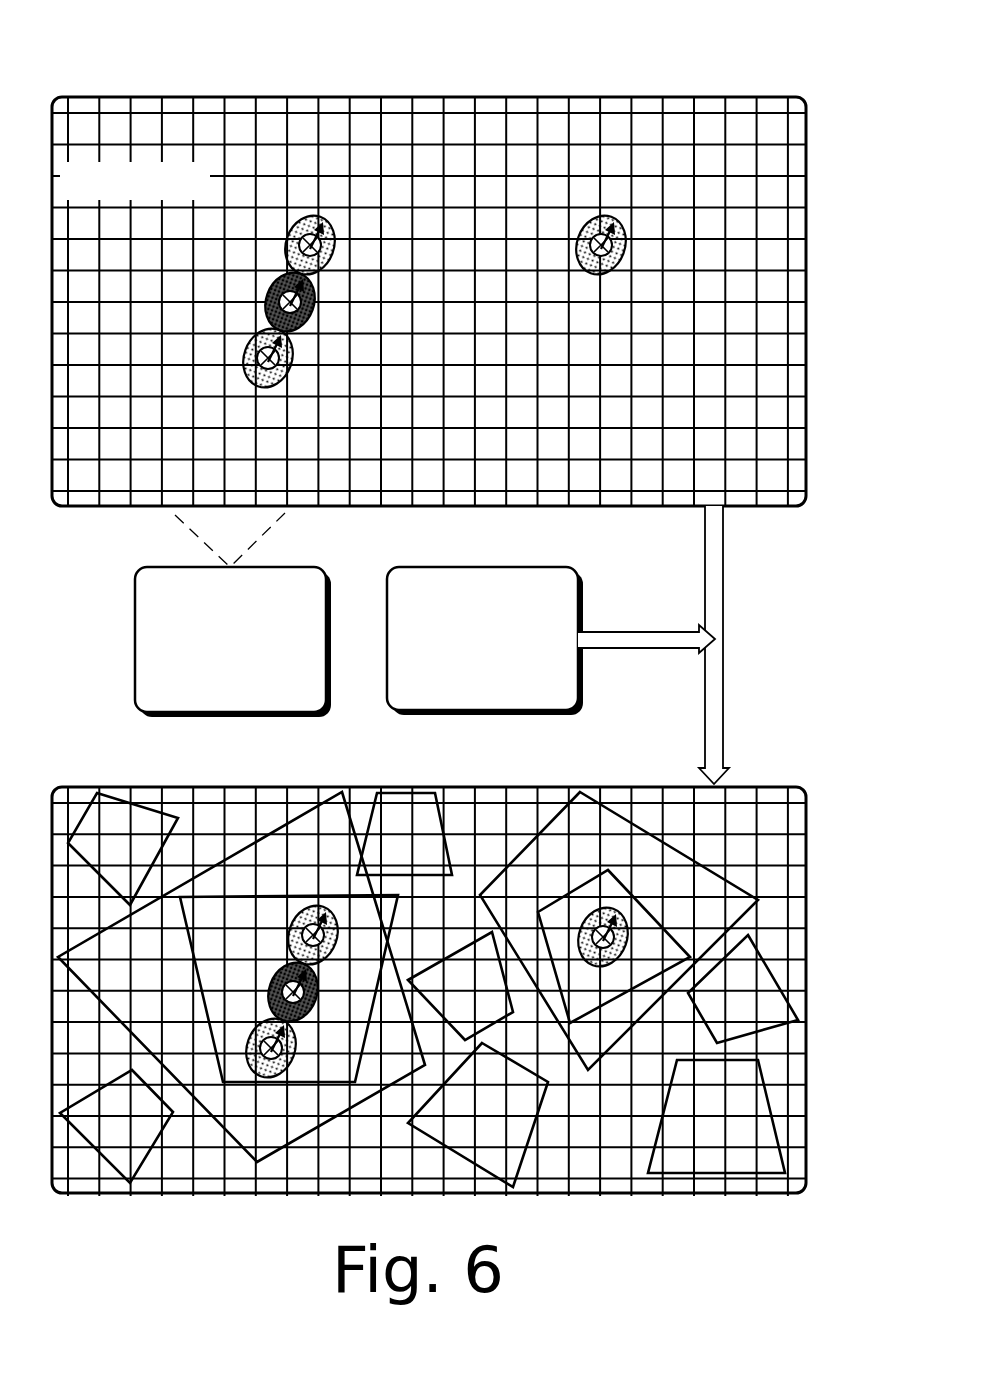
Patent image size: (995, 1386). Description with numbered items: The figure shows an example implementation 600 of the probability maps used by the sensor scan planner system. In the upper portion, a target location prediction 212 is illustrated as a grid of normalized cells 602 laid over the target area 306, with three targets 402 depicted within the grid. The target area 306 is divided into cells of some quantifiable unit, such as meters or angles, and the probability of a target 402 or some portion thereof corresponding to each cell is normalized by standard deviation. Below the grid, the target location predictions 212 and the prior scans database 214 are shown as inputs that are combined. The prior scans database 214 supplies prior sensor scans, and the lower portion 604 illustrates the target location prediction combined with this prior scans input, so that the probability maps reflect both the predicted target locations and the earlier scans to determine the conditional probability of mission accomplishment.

The example implementation 600 is at (463, 598).
The target area 306 is at (429, 264).
The grid of normalized cells 602 is at (334, 134).
The target 402 is at (258, 333).
The target location predictions 212 is at (233, 642).
The prior scans database 214 is at (485, 641).
The target location prediction combined with prior scans input 604 is at (744, 814).